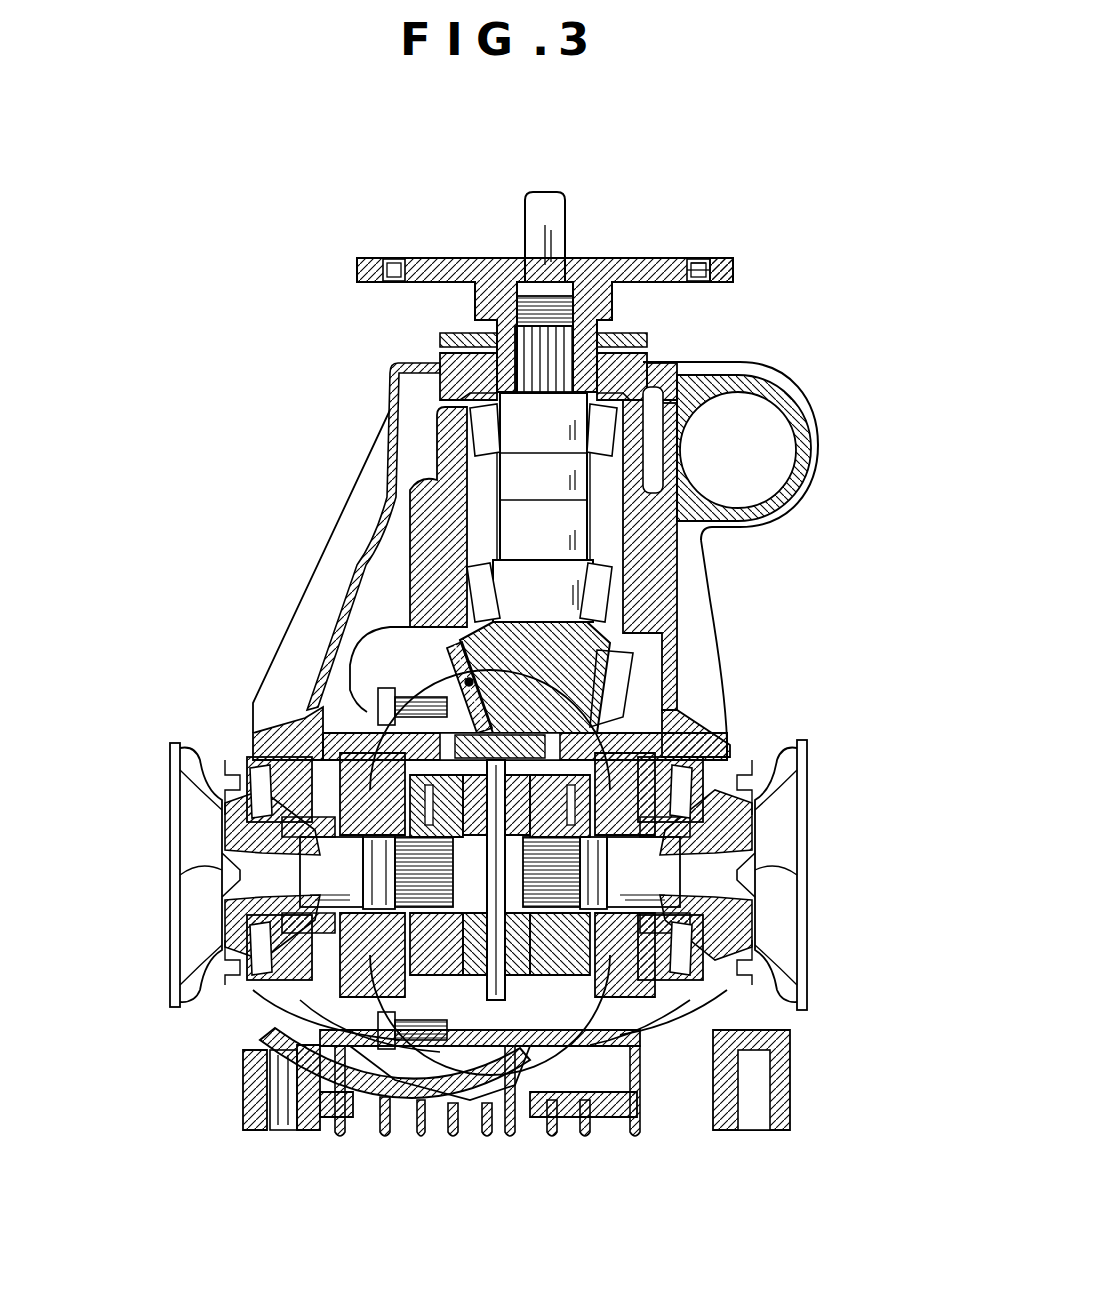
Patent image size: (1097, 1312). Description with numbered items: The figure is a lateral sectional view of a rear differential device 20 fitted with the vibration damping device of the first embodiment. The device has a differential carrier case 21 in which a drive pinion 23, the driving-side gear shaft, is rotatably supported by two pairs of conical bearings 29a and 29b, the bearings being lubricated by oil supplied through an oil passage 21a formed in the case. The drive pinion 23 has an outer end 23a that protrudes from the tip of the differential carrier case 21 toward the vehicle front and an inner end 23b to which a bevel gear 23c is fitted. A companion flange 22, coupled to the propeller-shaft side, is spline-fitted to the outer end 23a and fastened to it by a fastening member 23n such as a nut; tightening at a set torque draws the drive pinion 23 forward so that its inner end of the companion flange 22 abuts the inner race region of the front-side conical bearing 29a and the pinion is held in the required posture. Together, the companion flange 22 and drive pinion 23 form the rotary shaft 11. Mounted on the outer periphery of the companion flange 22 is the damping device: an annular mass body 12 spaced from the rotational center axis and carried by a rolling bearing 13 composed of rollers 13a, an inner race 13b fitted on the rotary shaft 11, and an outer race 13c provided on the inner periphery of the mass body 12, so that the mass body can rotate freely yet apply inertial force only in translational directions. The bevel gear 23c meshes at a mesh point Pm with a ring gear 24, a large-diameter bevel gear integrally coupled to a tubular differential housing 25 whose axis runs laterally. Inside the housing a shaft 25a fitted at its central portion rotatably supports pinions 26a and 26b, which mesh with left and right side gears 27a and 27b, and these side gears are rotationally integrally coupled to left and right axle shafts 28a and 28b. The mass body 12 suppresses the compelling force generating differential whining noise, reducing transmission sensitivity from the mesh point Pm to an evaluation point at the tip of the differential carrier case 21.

The rotary shaft 11 is at (375, 238).
The mass body 12 is at (729, 246).
The rolling bearing 13 is at (698, 246).
The rollers 13a is at (698, 290).
The inner race 13b is at (688, 283).
The outer race 13c is at (708, 283).
The rear differential device 20 is at (715, 160).
The differential carrier case 21 is at (340, 525).
The oil passage 21a is at (385, 484).
The companion flange 22 is at (660, 268).
The drive pinion 23 is at (625, 379).
The outer end 23a is at (552, 190).
The fastening member 23n is at (515, 310).
The inner end 23b is at (612, 716).
The bevel gear 23c is at (632, 672).
The ring gear 24 is at (500, 1082).
The differential housing 25 is at (372, 762).
The shaft 25a is at (520, 1072).
The pinion 26a is at (598, 782).
The pinion 26b is at (420, 1020).
The left side gear 27a is at (375, 1000).
The right side gear 27b is at (590, 980).
The left axle shaft 28a is at (190, 878).
The right axle shaft 28b is at (800, 878).
The front-side conical bearing 29a is at (700, 372).
The conical bearing 29b is at (648, 632).
The mesh point Pm is at (443, 670).